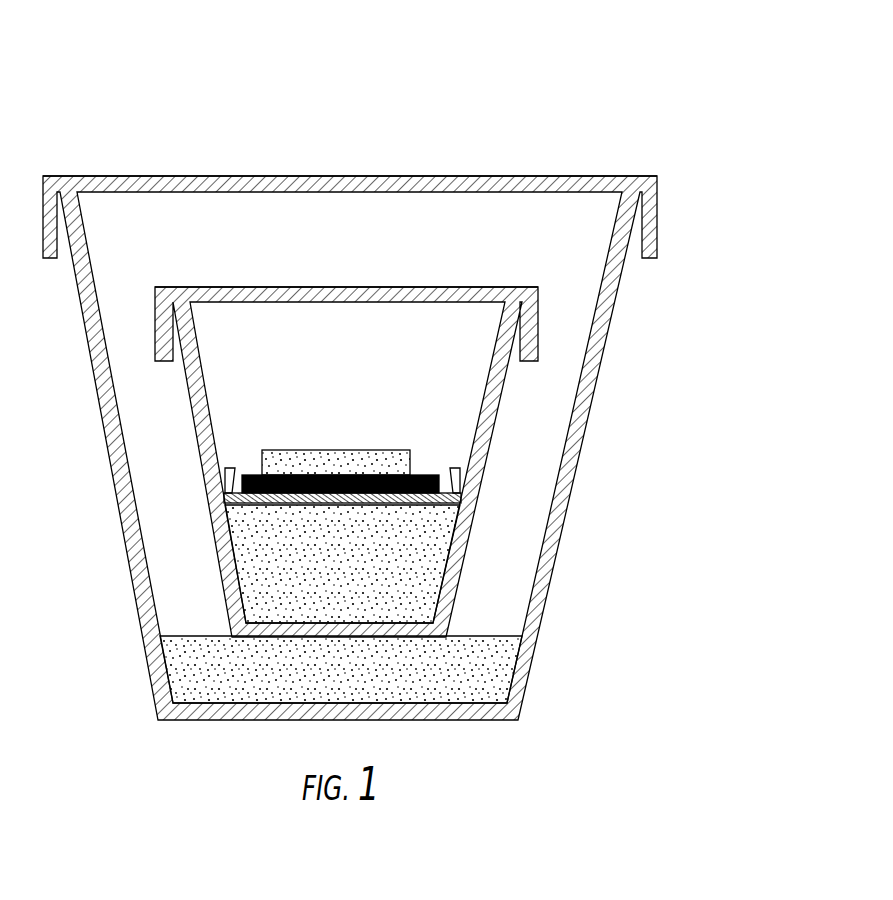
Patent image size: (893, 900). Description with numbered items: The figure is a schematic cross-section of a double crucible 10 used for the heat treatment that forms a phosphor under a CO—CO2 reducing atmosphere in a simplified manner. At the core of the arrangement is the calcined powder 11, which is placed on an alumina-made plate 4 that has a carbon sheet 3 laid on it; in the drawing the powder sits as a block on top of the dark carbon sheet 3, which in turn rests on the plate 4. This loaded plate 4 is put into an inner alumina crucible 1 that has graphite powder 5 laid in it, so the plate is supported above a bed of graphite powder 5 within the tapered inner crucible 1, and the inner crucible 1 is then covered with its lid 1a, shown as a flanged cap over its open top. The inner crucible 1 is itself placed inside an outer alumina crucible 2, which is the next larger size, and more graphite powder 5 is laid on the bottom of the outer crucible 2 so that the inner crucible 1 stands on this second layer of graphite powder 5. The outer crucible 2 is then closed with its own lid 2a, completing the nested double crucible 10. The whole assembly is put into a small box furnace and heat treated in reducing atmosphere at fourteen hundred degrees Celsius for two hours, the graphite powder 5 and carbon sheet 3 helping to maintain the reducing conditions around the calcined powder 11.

The double crucible 10 is at (108, 133).
The alumina crucible (inside) 1 is at (406, 357).
The lid of alumina crucible 1a is at (438, 287).
The alumina crucible (outside) 2 is at (358, 390).
The lid of alumina crucible 2a is at (547, 176).
The carbon sheet 3 is at (248, 487).
The alumina-made plate 4 is at (460, 475).
The graphite powder 5 is at (222, 668).
The calcined powder 11 is at (278, 452).